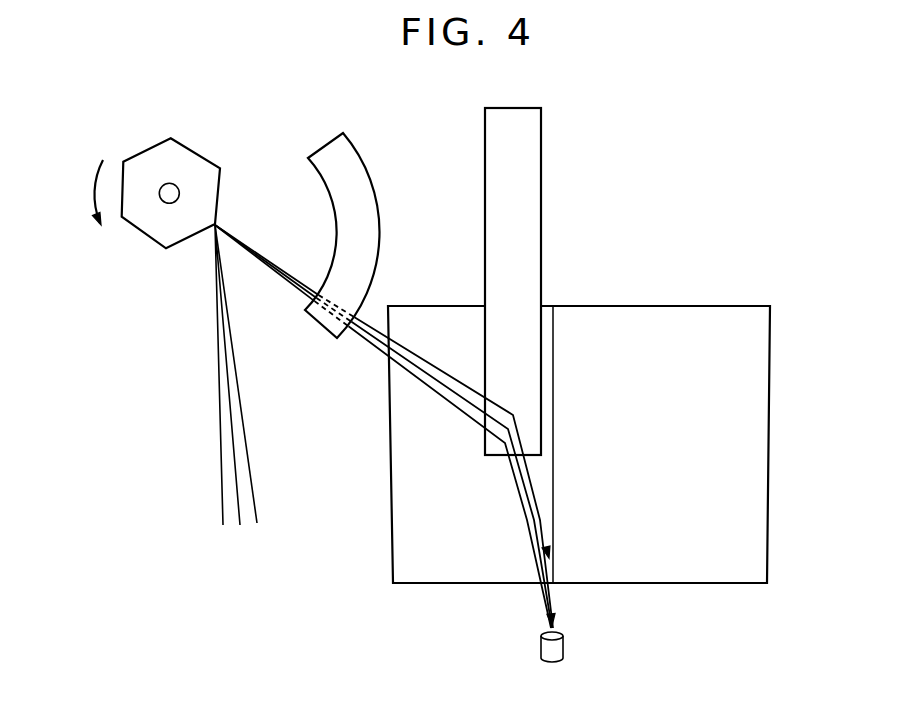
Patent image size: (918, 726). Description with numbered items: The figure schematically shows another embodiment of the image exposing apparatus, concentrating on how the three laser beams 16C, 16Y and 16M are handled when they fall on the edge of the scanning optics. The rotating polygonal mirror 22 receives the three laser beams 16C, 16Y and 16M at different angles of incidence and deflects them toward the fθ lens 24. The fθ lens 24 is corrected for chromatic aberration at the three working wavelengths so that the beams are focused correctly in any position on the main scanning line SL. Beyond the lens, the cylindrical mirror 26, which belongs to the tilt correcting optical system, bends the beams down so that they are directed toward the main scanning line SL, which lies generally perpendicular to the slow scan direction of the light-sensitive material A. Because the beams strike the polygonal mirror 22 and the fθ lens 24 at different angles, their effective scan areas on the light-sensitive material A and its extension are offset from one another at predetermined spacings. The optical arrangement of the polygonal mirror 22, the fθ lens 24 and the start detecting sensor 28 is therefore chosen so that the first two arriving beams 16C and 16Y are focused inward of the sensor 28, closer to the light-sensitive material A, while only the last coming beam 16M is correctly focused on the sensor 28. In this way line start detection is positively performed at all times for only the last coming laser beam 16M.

The polygonal mirror 22 is at (197, 163).
The fθ lens 24 is at (358, 173).
The cylindrical mirror 26 is at (532, 158).
The main scanning line SL is at (553, 410).
The light-sensitive material A is at (712, 563).
The laser beam 16Y is at (443, 387).
The laser beam 16C is at (535, 502).
The laser beam 16M is at (523, 523).
The start detecting sensor 28 is at (563, 642).